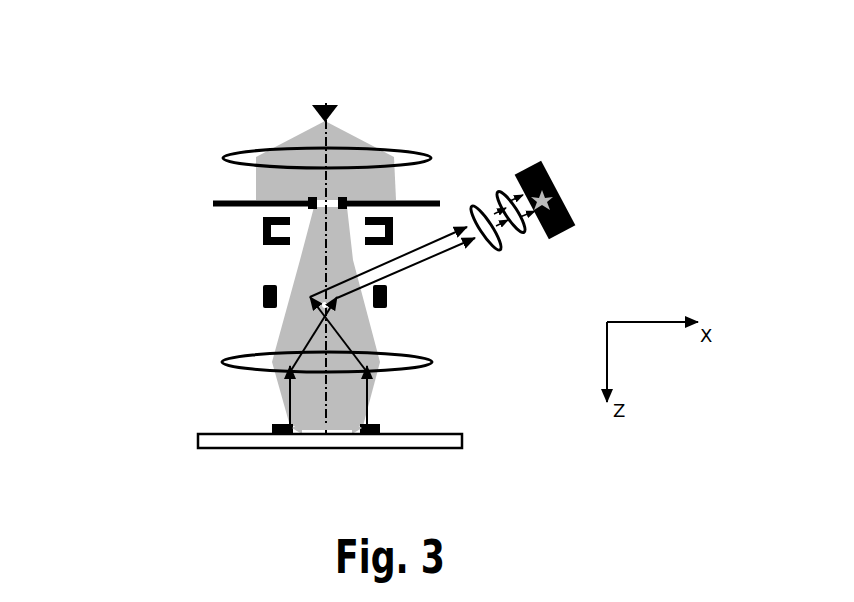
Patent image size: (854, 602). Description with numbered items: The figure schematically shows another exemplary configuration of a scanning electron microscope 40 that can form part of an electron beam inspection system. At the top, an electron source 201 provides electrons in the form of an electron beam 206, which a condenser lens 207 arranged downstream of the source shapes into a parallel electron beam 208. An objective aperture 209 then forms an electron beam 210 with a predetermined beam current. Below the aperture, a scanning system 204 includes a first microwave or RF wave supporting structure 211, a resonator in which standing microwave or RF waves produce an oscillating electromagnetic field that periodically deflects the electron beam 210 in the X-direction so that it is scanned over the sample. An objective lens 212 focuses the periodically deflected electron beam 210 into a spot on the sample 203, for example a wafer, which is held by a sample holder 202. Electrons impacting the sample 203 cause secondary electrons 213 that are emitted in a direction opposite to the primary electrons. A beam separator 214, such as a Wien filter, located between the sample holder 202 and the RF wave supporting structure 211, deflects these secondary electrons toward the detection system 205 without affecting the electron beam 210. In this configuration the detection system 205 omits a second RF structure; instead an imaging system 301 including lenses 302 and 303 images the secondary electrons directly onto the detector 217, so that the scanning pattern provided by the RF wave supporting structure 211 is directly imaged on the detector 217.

The scanning electron microscope 40 is at (213, 105).
The electron source 201 is at (328, 102).
The sample holder 202 is at (463, 438).
The sample 203 is at (287, 427).
The scanning system 204 is at (247, 227).
The detection system 205 is at (528, 275).
The electron beam 206 is at (350, 130).
The condenser lens 207 is at (226, 158).
The parallel electron beam 208 is at (272, 173).
The objective aperture 209 is at (213, 203).
The electron beam 210 is at (320, 213).
The first microwave or RF wave supporting structure 211 is at (262, 242).
The objective lens 212 is at (433, 360).
The secondary electrons 213 is at (288, 392).
The beam separator 214 is at (388, 293).
The detector 217 is at (567, 215).
The imaging system 301 is at (556, 166).
The lens 302 is at (473, 207).
The lens 303 is at (520, 233).